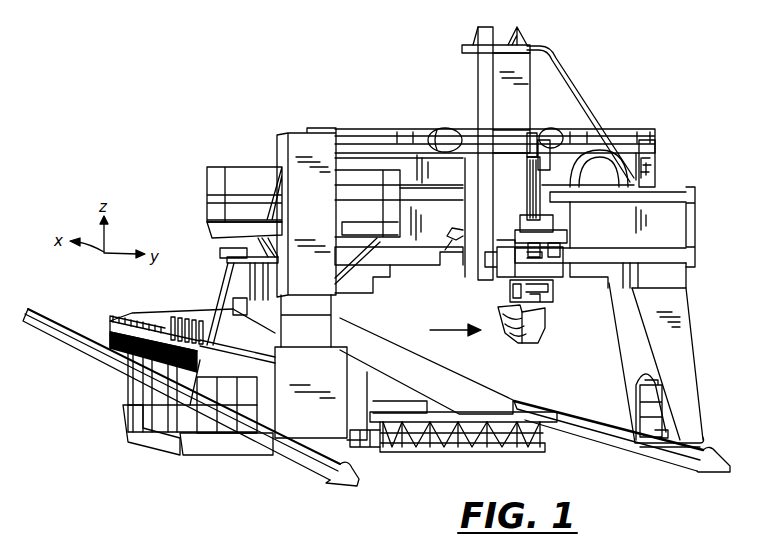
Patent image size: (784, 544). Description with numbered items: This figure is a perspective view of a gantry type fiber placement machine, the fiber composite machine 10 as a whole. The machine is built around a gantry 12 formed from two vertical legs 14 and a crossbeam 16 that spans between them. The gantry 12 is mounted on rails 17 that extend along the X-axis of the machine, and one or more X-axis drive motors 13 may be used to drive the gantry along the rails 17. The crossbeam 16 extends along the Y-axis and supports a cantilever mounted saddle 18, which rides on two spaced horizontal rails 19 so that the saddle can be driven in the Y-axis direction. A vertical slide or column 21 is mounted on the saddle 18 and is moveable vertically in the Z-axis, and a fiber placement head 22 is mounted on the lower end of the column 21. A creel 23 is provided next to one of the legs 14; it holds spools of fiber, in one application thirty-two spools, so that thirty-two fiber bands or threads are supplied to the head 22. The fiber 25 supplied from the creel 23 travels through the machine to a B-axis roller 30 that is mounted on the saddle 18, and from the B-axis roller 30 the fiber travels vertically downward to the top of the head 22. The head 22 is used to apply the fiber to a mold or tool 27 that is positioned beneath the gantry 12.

The fiber composite machine 10 is at (230, 91).
The gantry 12 is at (724, 246).
The X-axis drive motor 13 is at (640, 397).
The vertical legs 14 is at (357, 307).
The crossbeam 16 is at (680, 213).
The rails 17 is at (580, 422).
The saddle 18 is at (470, 155).
The horizontal rails 19 is at (555, 193).
The vertical slide or column 21 is at (502, 92).
The fiber placement head 22 is at (539, 327).
The creel 23 is at (210, 340).
The fiber 25 is at (383, 152).
The mold or tool 27 is at (493, 395).
The B-axis roller 30 is at (527, 147).